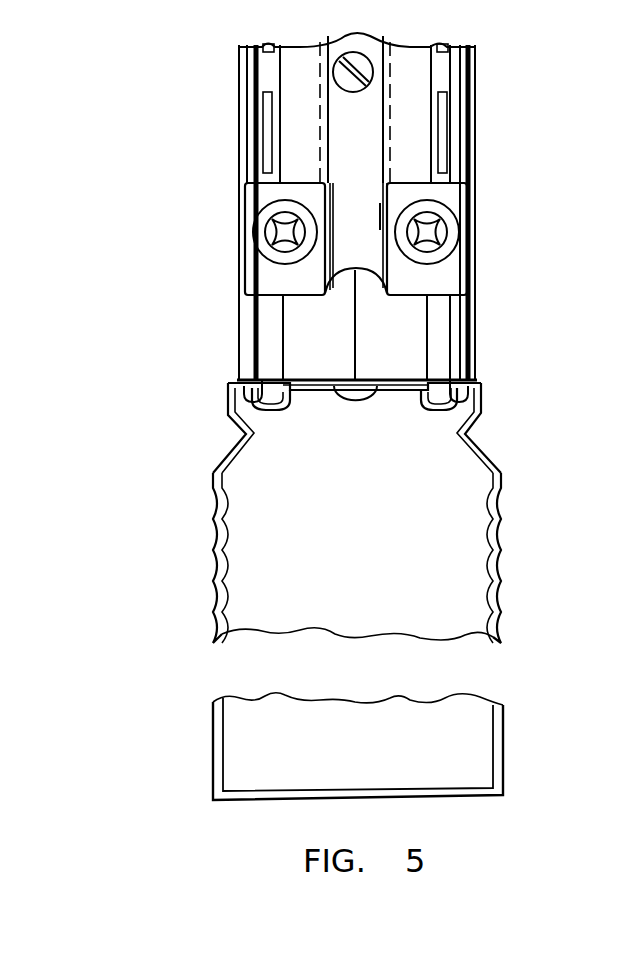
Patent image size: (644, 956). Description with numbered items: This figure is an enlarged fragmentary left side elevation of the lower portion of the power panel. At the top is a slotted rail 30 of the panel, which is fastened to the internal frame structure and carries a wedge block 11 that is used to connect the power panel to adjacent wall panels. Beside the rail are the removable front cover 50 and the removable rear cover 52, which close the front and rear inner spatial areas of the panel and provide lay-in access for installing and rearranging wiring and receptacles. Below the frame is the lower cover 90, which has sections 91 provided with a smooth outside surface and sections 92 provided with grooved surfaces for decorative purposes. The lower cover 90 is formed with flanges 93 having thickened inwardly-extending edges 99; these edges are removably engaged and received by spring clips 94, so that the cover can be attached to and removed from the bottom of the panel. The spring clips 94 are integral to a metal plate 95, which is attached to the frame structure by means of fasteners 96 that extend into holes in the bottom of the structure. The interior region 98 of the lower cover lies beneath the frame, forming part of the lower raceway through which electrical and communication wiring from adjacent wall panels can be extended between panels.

The wedge block 11 is at (443, 193).
The slotted rail 30 is at (405, 138).
The front cover 50 is at (475, 330).
The rear cover 52 is at (250, 162).
The lower cover 90 is at (298, 800).
The sections with smooth outside surface 91 is at (213, 758).
The sections with grooved surfaces 92 is at (213, 540).
The flanges 93 is at (229, 397).
The spring clips 94 is at (244, 431).
The metal plate 95 is at (395, 390).
The fasteners 96 is at (358, 395).
The cover interior 98 is at (420, 538).
The thickened inwardly-extending edges 99 is at (252, 390).